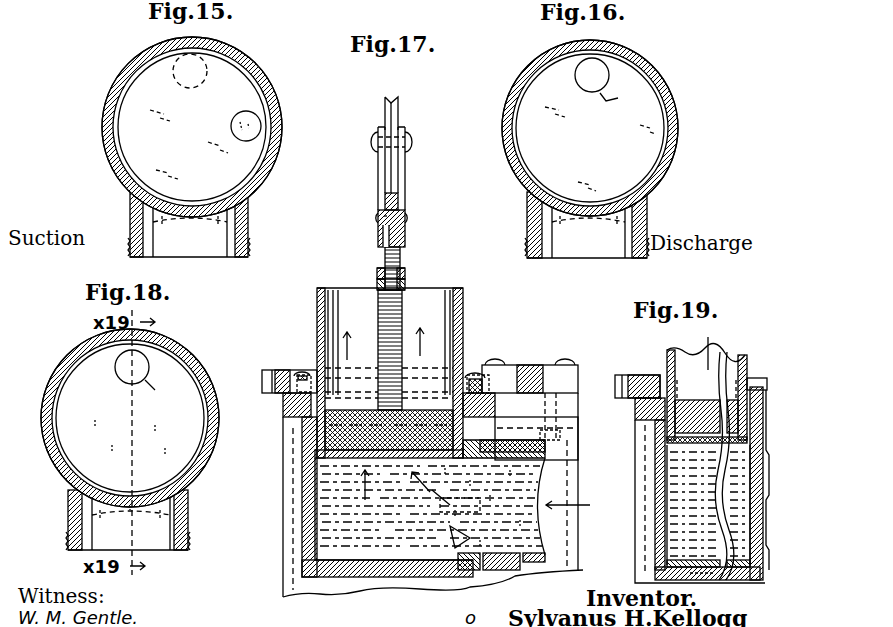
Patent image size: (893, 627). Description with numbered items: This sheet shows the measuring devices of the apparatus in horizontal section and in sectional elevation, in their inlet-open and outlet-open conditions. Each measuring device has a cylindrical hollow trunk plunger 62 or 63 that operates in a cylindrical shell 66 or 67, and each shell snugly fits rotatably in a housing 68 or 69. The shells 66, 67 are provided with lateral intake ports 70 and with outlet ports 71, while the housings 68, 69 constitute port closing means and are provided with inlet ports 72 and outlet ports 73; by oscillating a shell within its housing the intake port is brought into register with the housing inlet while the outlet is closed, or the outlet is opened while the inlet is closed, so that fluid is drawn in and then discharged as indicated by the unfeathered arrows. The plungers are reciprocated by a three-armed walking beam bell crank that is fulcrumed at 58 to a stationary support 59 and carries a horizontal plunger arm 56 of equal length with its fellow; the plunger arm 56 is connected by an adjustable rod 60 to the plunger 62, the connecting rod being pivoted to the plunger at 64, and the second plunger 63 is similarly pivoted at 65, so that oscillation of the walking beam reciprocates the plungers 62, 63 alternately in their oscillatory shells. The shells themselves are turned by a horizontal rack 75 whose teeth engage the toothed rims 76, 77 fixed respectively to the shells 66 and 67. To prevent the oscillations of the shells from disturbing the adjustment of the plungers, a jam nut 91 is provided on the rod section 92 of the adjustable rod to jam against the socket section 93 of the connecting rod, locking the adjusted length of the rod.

In FIG. 17, the plunger arm 56 is at (405, 101).
In FIG. 17, the fulcrum 58 is at (412, 139).
In FIG. 17, the stationary support 59 is at (378, 173).
In FIG. 17, the adjustable rod 60 is at (373, 247).
In FIG. 17, the hollow trunk plunger 62 is at (318, 300).
In FIG. 19, the hollow trunk plunger 63 is at (668, 354).
In FIG. 17, the pivot 64 is at (351, 410).
In FIG. 19, the pivot 65 is at (706, 376).
In FIG. 15, the cylindrical shell 66 is at (105, 151).
In FIG. 18, the cylindrical shell 66 is at (45, 426).
In FIG. 16, the cylindrical shell 67 is at (674, 141).
In FIG. 19, the cylindrical shell 67 is at (655, 464).
In FIG. 15, the housing 68 is at (117, 171).
In FIG. 18, the housing 68 is at (193, 366).
In FIG. 17, the housing 68 is at (530, 366).
In FIG. 16, the housing 69 is at (676, 162).
In FIG. 19, the housing 69 is at (650, 488).
In FIG. 15, the lateral intake port 70 is at (190, 201).
In FIG. 16, the lateral intake port 70 is at (518, 128).
In FIG. 18, the lateral intake port 70 is at (207, 401).
In FIG. 17, the lateral intake port 70 is at (462, 568).
In FIG. 15, the outlet port 71 is at (231, 125).
In FIG. 16, the outlet port 71 is at (617, 102).
In FIG. 18, the outlet port 71 is at (160, 392).
In FIG. 19, the outlet port 71 is at (677, 565).
In FIG. 15, the inlet port 72 is at (190, 214).
In FIG. 16, the inlet port 72 is at (587, 214).
In FIG. 18, the inlet port 72 is at (137, 512).
In FIG. 17, the inlet port 72 is at (450, 530).
In FIG. 15, the outlet port 73 is at (176, 81).
In FIG. 16, the outlet port 73 is at (578, 82).
In FIG. 18, the outlet port 73 is at (117, 377).
In FIG. 17, the outlet port 73 is at (336, 580).
In FIG. 19, the outlet port 73 is at (700, 584).
In FIG. 17, the horizontal rack 75 is at (550, 365).
In FIG. 17, the toothed rim 76 is at (287, 372).
In FIG. 19, the toothed rim 77 is at (637, 375).
In FIG. 17, the jam nut 91 is at (405, 272).
In FIG. 17, the rod section 92 is at (400, 252).
In FIG. 17, the socket section 93 is at (405, 285).